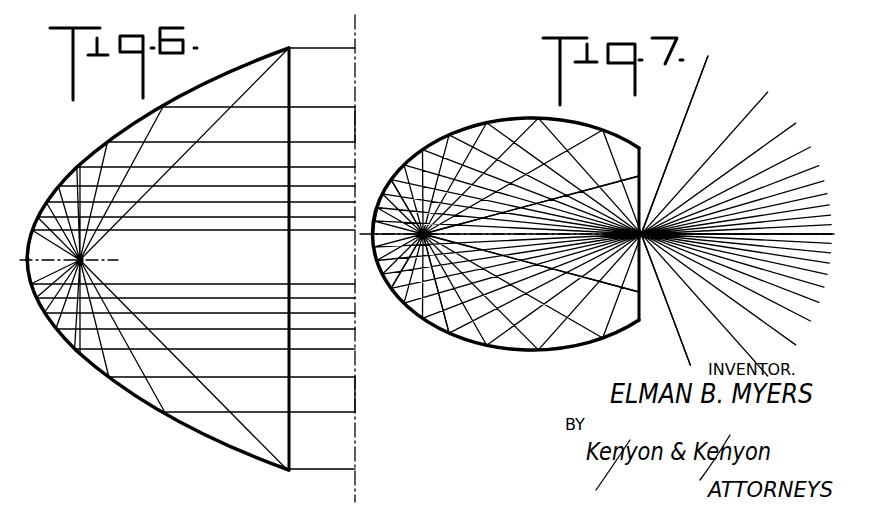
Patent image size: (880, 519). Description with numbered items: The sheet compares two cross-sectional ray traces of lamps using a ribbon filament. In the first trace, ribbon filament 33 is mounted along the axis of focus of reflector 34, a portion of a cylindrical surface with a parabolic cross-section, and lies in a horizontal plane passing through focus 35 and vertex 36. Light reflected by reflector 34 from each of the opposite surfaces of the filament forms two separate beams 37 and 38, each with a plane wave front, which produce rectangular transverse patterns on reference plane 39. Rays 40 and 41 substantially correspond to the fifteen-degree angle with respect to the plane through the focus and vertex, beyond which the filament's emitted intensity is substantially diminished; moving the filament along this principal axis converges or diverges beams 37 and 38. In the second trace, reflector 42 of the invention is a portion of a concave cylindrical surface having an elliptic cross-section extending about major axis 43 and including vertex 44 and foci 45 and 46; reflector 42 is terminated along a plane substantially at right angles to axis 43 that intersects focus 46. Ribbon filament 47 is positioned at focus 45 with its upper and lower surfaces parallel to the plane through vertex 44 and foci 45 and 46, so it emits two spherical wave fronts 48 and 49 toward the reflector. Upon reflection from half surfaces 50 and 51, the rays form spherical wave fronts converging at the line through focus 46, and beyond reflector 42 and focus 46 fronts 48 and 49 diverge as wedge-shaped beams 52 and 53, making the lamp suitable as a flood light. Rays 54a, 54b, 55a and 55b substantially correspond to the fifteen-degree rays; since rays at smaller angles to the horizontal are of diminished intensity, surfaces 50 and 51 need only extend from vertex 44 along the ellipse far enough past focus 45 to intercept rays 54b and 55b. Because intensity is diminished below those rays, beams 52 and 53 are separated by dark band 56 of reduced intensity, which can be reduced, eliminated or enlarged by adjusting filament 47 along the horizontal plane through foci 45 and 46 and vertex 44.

In FIG. 6, the ribbon filament 33 is at (86, 261).
In FIG. 6, the reflector 34 is at (112, 396).
In FIG. 6, the focus 35 is at (101, 266).
In FIG. 6, the vertex 36 is at (25, 264).
In FIG. 6, the beam 37 is at (362, 136).
In FIG. 6, the beam 38 is at (364, 377).
In FIG. 6, the reference plane 39 is at (357, 33).
In FIG. 6, the ray 40 is at (29, 230).
In FIG. 6, the ray 41 is at (42, 270).
In FIG. 7, the reflector 42 is at (503, 358).
In FIG. 7, the major axis 43 is at (385, 257).
In FIG. 7, the vertex 44 is at (366, 222).
In FIG. 7, the focus 45 is at (431, 238).
In FIG. 7, the focus 46 is at (651, 196).
In FIG. 7, the ribbon filament 47 is at (418, 235).
In FIG. 7, the spherical wave front 48 is at (470, 130).
In FIG. 7, the spherical wave front 49 is at (441, 316).
In FIG. 7, the half surface 50 is at (527, 121).
In FIG. 7, the half surface 51 is at (518, 352).
In FIG. 7, the beam 52 is at (673, 331).
In FIG. 7, the beam 53 is at (683, 107).
In FIG. 7, the ray 54a is at (384, 178).
In FIG. 7, the ray 54b is at (531, 209).
In FIG. 7, the ray 55a is at (393, 284).
In FIG. 7, the ray 55b is at (531, 258).
In FIG. 7, the dark band 56 is at (815, 233).